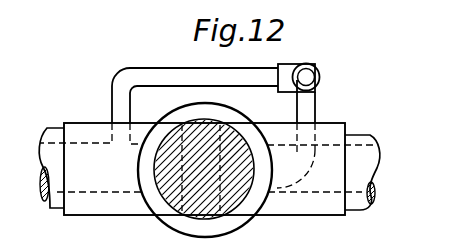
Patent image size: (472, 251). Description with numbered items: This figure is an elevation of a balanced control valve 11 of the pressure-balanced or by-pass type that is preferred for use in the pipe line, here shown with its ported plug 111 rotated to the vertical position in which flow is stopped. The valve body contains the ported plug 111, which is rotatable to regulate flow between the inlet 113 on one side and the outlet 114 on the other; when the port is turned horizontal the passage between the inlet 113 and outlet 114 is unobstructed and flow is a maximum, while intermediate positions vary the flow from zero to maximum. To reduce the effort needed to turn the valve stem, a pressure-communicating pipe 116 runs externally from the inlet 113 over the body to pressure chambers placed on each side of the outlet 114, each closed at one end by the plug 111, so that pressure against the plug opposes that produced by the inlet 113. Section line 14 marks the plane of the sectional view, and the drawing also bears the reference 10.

The pipe 10 is at (361, 136).
The control valve 11 is at (332, 124).
The section line 14- 14 is at (85, 167).
The ported plug 111 is at (229, 203).
The inlet 113 is at (58, 193).
The outlet 114 is at (356, 213).
The pressure-communicating pipe 116 is at (216, 94).